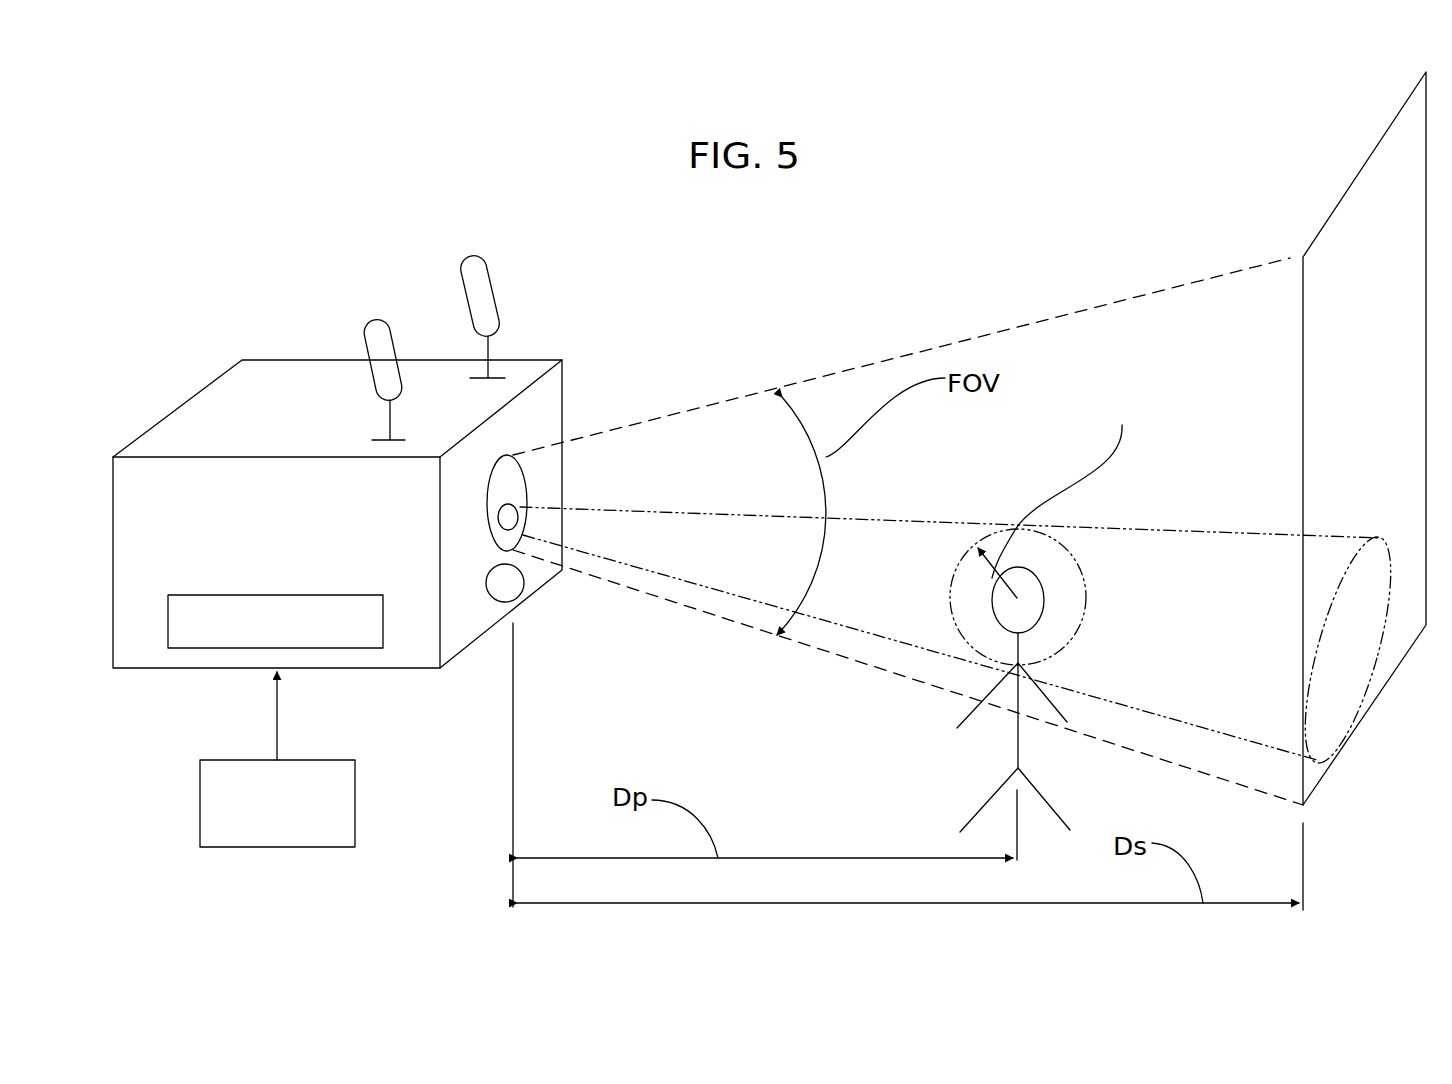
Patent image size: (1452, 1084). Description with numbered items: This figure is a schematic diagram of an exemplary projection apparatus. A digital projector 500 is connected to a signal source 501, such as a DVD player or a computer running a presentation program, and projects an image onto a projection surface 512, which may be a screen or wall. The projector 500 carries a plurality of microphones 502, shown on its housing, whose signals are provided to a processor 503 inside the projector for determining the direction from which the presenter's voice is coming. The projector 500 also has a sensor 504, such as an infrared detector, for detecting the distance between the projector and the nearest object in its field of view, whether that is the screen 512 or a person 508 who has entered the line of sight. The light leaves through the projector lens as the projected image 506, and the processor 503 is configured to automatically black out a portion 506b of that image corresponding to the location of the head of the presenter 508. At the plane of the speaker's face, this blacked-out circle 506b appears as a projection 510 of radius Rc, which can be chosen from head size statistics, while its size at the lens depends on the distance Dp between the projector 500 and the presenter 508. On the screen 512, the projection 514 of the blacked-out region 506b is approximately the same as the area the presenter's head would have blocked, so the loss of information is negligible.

The digital projector 500 is at (292, 392).
The signal source 501 is at (357, 800).
The microphones 502 is at (468, 252).
The processor 503 is at (230, 648).
The sensor 504 is at (523, 587).
The projected image 506 is at (520, 473).
The blacked-out portion 506b is at (487, 516).
The person 508 is at (1018, 747).
The projection of blacked-out circle 510 is at (1080, 620).
The projection surface 512 is at (1357, 168).
The projection of blacked-out region on screen 514 is at (1392, 587).